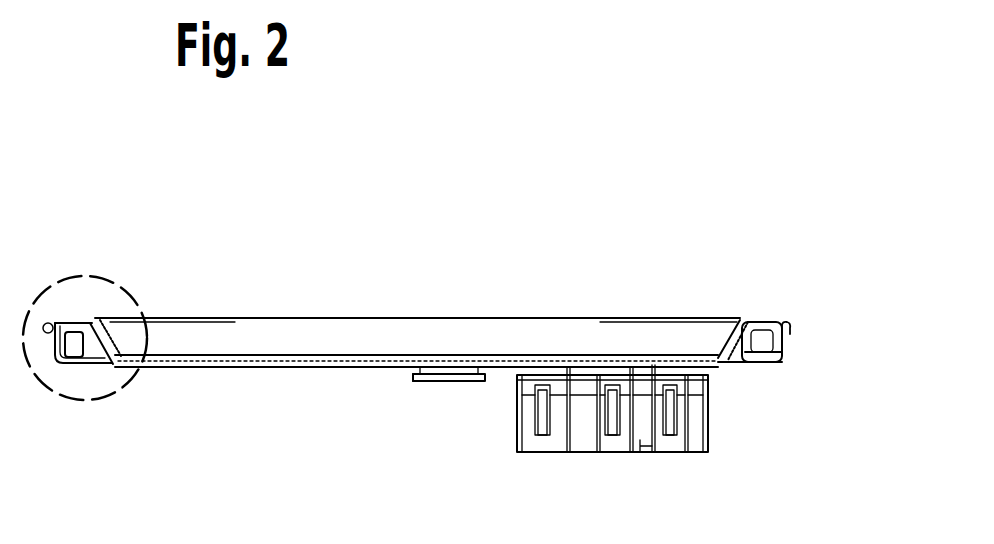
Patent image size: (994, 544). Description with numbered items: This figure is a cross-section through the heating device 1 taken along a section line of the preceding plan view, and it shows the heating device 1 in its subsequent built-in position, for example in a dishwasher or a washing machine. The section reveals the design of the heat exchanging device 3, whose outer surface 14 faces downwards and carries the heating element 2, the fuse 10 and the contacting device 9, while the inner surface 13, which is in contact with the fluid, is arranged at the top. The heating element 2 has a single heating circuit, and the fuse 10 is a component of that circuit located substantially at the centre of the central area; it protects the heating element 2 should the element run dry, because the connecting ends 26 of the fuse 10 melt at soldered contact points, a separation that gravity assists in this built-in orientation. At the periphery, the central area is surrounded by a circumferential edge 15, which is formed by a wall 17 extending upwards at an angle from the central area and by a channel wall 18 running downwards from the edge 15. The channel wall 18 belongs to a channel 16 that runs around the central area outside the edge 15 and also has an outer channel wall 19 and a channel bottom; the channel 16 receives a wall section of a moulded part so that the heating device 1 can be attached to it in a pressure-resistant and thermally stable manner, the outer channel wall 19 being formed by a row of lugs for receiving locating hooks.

The heating device 1 is at (455, 298).
The heating element 2 is at (391, 336).
The heat exchanging device 3 is at (428, 318).
The contacting device 9 is at (652, 452).
The fuse 10 is at (450, 381).
The inner surface 13 is at (265, 318).
The outer surface 14 is at (268, 367).
The circumferential edge 15 is at (744, 320).
The channel 16 is at (782, 350).
The wall 17 is at (720, 342).
The channel wall 18 is at (733, 362).
The outer channel wall 19 is at (788, 323).
The connecting ends 26 is at (420, 368).